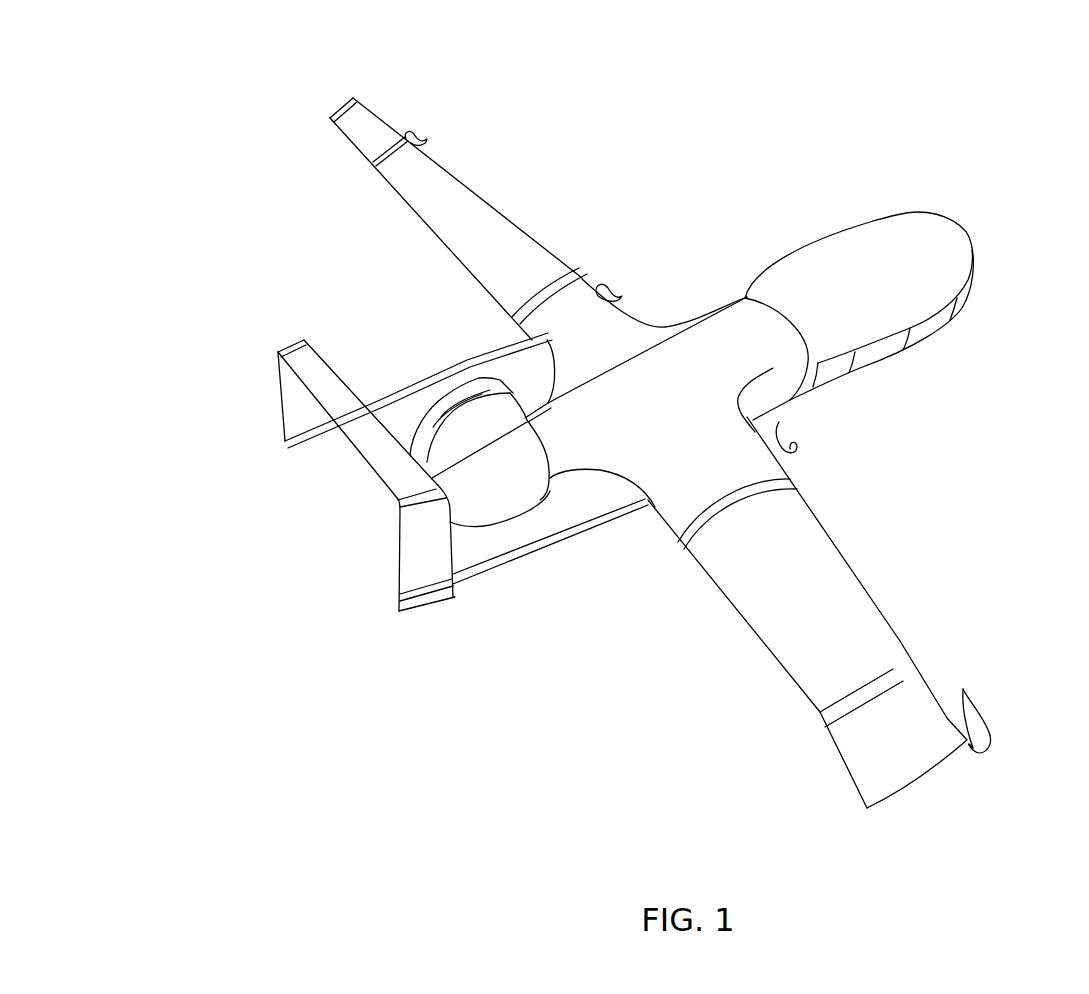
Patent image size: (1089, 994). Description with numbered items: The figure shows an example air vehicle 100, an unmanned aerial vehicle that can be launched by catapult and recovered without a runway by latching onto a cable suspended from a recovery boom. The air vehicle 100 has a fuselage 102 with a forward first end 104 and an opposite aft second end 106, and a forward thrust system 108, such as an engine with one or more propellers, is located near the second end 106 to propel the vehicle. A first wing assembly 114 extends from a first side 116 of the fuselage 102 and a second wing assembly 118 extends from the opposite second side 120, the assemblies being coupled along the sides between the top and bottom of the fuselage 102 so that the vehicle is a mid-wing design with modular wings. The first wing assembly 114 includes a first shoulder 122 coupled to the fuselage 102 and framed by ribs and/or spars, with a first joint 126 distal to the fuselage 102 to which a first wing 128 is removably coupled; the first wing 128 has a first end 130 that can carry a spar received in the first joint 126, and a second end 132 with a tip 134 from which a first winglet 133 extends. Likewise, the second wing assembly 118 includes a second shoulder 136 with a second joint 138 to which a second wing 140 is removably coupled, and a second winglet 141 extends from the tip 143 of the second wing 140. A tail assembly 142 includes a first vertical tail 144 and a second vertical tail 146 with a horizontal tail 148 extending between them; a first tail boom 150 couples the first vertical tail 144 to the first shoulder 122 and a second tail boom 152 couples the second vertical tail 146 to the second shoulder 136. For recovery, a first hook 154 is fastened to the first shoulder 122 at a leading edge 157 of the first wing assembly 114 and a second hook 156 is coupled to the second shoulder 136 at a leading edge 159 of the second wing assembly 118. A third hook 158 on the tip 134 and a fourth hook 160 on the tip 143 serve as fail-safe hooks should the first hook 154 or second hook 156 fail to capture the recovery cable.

The air vehicle 100 is at (230, 71).
The fuselage 102 is at (742, 333).
The first end 104 is at (985, 236).
The second end 106 is at (527, 396).
The forward thrust system 108 is at (452, 390).
The first wing assembly 114 is at (725, 654).
The first side 116 is at (812, 407).
The second wing assembly 118 is at (388, 222).
The second side 120 is at (728, 296).
The first shoulder 122 is at (670, 505).
The first joint 126 is at (690, 522).
The first wing 128 is at (880, 640).
The first end 130 is at (808, 492).
The second end 132 is at (830, 773).
The first winglet 133 is at (908, 773).
The tip 134 is at (950, 718).
The second shoulder 136 is at (518, 321).
The second joint 138 is at (510, 310).
The second wing 140 is at (463, 202).
The second winglet 141 is at (353, 124).
The tail assembly 142 is at (287, 328).
The tip 143 is at (382, 162).
The first vertical tail 144 is at (418, 572).
The second vertical tail 146 is at (290, 412).
The horizontal tail 148 is at (395, 480).
The first tail boom 150 is at (485, 570).
The second tail boom 152 is at (418, 386).
The first hook 154 is at (785, 433).
The second hook 156 is at (612, 287).
The leading edge 157 is at (858, 566).
The third hook 158 is at (990, 745).
The leading edge 159 is at (527, 235).
The fourth hook 160 is at (418, 140).